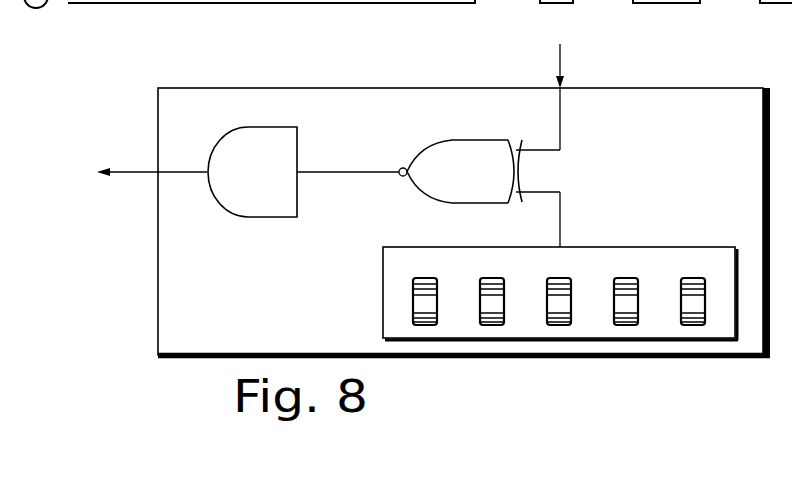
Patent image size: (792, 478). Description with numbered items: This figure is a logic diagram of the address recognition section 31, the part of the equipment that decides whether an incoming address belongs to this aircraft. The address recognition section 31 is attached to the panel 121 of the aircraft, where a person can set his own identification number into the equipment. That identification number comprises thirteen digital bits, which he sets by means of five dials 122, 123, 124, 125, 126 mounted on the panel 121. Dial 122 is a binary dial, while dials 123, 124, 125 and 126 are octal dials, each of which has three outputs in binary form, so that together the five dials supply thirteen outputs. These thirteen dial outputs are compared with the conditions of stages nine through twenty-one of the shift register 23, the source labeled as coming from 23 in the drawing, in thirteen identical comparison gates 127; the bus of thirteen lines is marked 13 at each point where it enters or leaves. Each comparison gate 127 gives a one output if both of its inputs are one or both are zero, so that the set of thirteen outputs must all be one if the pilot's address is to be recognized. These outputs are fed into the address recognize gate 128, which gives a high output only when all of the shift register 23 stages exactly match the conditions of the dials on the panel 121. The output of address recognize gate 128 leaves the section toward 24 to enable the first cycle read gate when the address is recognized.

The address recognition section 31 is at (168, 78).
The shift register 23 is at (558, 58).
The address recognition output destination 24 is at (141, 173).
The 13-line bus 13 is at (338, 179).
The comparison gates 127 is at (452, 139).
The address recognize gate 128 is at (237, 218).
The panel 121 is at (395, 239).
The binary dial 122 is at (427, 281).
The octal dial 123 is at (494, 281).
The octal dial 124 is at (561, 281).
The octal dial 125 is at (628, 281).
The octal dial 126 is at (695, 281).